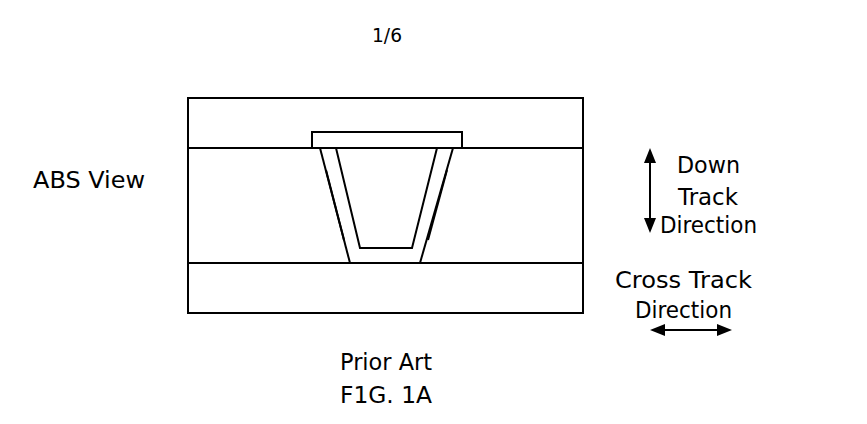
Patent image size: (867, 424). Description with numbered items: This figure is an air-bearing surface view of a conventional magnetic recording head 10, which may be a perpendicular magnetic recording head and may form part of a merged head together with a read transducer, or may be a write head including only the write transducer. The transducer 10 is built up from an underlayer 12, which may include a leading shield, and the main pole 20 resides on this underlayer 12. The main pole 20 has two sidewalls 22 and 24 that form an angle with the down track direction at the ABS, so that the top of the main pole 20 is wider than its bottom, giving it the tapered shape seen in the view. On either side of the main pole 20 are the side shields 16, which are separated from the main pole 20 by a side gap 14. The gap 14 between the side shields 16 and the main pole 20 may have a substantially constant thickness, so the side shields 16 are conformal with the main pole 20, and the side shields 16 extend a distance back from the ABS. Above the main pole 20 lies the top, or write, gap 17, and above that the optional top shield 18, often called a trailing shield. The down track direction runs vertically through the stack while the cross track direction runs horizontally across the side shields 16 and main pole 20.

The magnetic recording head 10 is at (70, 110).
The underlayer 12 is at (385, 288).
The side gap 14 is at (324, 163).
The side shields 16 is at (385, 207).
The top (write) gap 17 is at (340, 132).
The top shield 18 is at (584, 127).
The main pole 20 is at (386, 198).
The sidewall 22 is at (318, 230).
The sidewall 24 is at (447, 226).